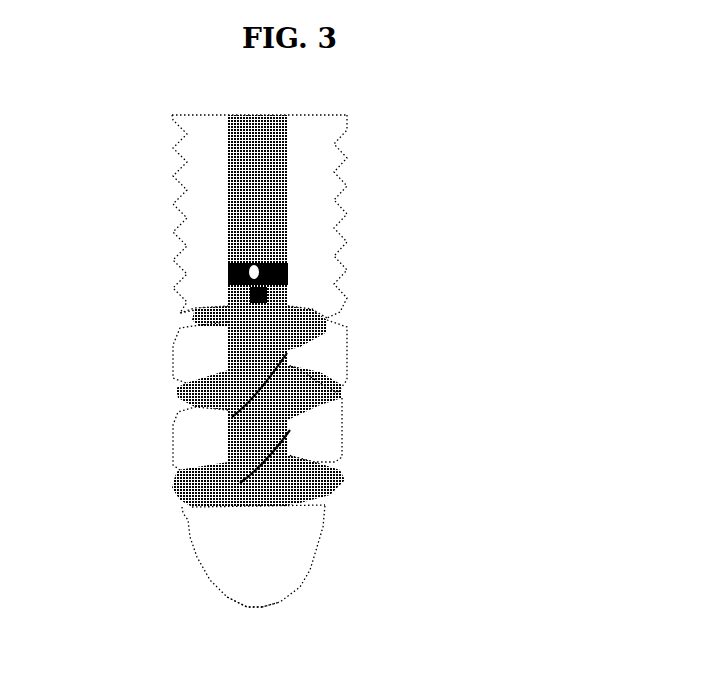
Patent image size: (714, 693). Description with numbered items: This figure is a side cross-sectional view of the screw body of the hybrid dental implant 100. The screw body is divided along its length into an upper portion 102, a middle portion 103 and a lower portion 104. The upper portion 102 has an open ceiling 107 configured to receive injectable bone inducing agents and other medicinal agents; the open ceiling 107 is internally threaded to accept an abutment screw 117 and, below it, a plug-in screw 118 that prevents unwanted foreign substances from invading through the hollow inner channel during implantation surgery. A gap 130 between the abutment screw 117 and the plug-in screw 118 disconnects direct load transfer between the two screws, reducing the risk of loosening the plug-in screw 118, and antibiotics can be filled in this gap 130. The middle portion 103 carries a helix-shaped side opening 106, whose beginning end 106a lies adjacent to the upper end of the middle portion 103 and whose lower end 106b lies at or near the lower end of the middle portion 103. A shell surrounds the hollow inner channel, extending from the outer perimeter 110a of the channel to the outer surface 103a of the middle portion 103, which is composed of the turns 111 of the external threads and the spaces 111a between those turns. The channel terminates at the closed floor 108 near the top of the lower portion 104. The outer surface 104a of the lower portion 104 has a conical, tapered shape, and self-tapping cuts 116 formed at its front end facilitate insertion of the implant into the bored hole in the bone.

The dental implant 100 is at (389, 181).
The upper portion 102 is at (170, 213).
The middle portion 103 is at (175, 380).
The outer surface of the middle portion 103a is at (331, 372).
The lower portion 104 is at (187, 560).
The outer surface of the lower portion 104a is at (213, 585).
The side opening 106 is at (303, 410).
The beginning end of the side opening 106a is at (197, 313).
The lower end of the side opening 106b is at (184, 501).
The open ceiling 107 is at (291, 243).
The closed floor 108 is at (273, 510).
The outer perimeter of the hollow inner channel 110a is at (289, 362).
The turns of the external threads 111 is at (346, 333).
The spaces between the turns of the external threads 111a is at (331, 358).
The self-tapping cuts 116 is at (309, 563).
The abutment screw 117 is at (318, 150).
The plug-in screw 118 is at (312, 313).
The gap 130 is at (291, 273).